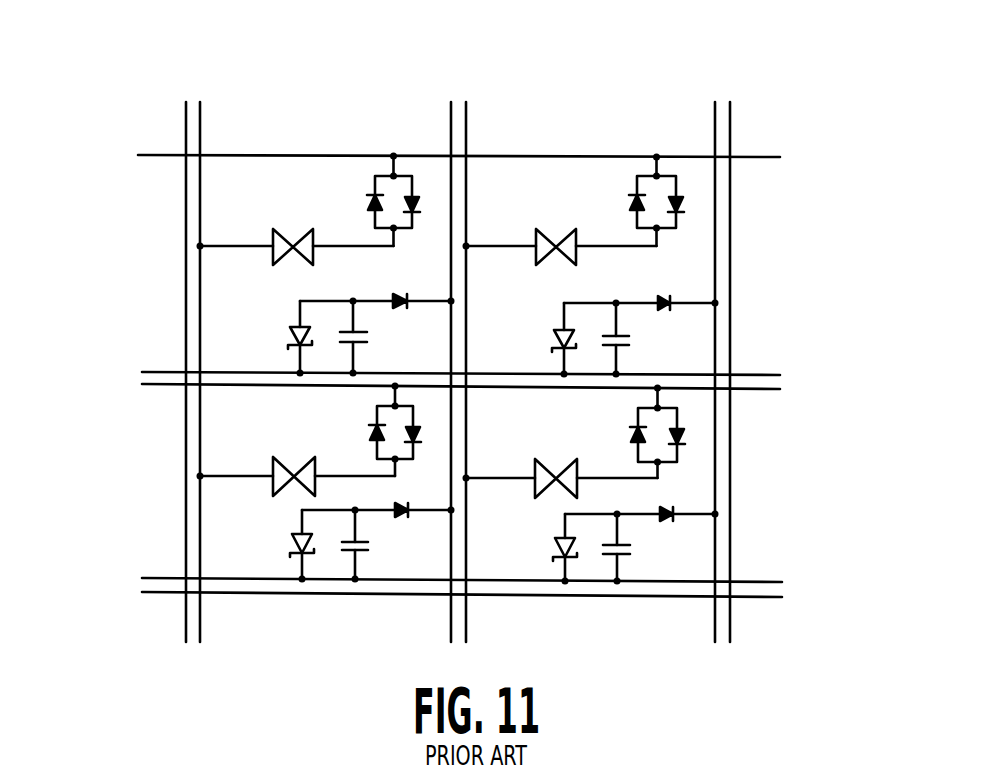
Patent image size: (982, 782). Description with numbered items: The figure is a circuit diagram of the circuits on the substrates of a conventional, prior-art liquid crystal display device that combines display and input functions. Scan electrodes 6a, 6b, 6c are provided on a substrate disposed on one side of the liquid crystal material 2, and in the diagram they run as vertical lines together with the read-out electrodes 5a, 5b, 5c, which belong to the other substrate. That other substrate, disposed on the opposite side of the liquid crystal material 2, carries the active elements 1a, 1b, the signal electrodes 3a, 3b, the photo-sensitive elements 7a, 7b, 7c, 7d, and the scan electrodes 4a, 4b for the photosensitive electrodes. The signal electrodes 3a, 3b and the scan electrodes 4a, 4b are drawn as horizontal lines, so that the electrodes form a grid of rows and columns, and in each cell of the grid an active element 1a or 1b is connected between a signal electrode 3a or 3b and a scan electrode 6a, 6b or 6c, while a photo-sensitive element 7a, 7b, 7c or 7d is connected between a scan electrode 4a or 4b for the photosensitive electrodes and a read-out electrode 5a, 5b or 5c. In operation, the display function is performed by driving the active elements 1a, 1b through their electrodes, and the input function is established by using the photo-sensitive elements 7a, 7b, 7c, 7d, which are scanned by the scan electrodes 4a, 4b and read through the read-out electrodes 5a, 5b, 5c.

The active element 1a is at (390, 172).
The active element 1b is at (678, 214).
The liquid crystal material 2 is at (290, 233).
The signal electrode 3a is at (155, 155).
The signal electrode 3b is at (158, 387).
The scan electrode for the photosensitive electrodes 4a is at (158, 372).
The scan electrode for the photosensitive electrodes 4b is at (163, 578).
The read-out electrode 5a is at (185, 119).
The read-out electrode 5b is at (450, 118).
The read-out electrode 5c is at (714, 122).
The scan electrode 6a is at (201, 118).
The scan electrode 6b is at (467, 118).
The scan electrode 6c is at (731, 120).
The photo-sensitive element 7a is at (277, 333).
The photo-sensitive element 7b is at (275, 552).
The photo-sensitive element 7c is at (540, 340).
The photo-sensitive element 7d is at (542, 553).